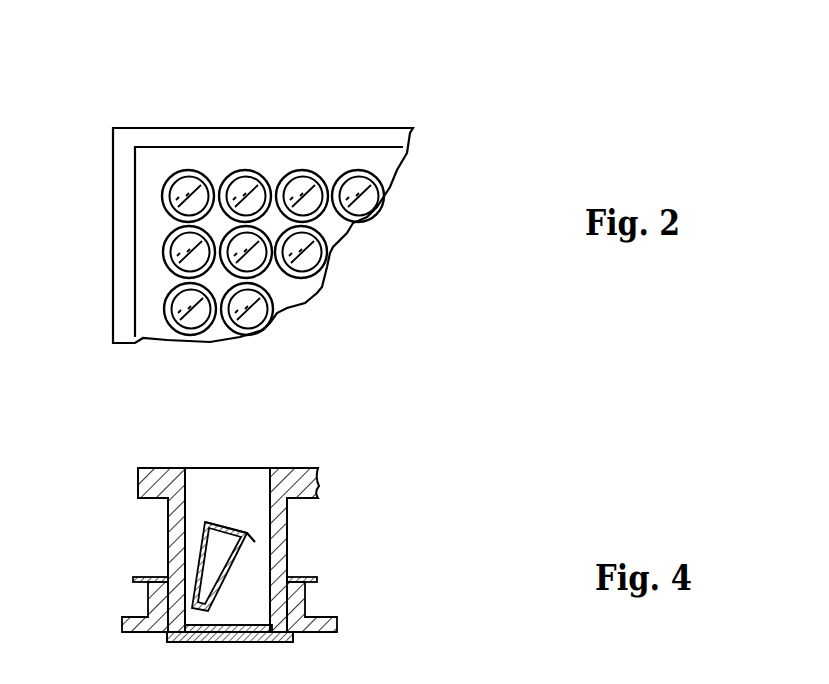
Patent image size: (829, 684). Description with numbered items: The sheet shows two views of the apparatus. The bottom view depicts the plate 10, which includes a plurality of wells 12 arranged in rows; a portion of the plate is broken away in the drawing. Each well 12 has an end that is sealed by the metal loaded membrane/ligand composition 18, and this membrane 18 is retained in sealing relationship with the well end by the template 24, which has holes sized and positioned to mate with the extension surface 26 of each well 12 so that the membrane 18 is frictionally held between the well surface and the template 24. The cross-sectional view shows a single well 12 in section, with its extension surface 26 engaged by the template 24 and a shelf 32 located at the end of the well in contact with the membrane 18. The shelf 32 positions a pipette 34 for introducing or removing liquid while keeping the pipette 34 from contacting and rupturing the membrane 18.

In FIG. 2, the plate 10 is at (243, 137).
In FIG. 2, the template 24 is at (185, 153).
In FIG. 4, the template 24 is at (150, 598).
In FIG. 2, the metal loaded membrane/ligand composition 18 is at (342, 182).
In FIG. 2, the well 12 is at (273, 308).
In FIG. 4, the well 12 is at (205, 460).
In FIG. 4, the extension surface 26 is at (288, 525).
In FIG. 4, the shelf 32 is at (210, 627).
In FIG. 4, the pipette 34 is at (204, 522).